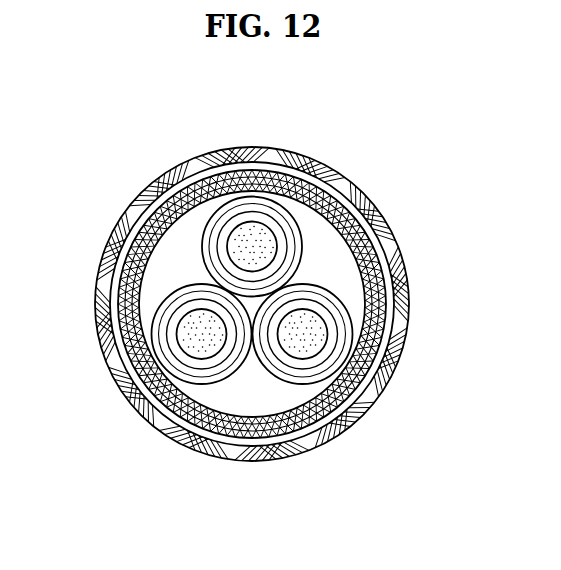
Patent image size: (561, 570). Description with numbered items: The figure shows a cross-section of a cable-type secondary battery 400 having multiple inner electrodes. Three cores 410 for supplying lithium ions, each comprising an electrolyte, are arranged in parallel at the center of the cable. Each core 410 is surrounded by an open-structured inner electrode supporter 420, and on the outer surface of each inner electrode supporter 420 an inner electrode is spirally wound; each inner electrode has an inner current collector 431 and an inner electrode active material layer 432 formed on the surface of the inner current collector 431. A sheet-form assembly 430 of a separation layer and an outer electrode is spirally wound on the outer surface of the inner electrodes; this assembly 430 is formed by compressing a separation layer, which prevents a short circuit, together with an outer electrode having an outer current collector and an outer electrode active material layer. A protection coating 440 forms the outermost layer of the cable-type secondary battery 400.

The cable-type secondary battery 400 is at (122, 148).
The core for supplying lithium ions 410 is at (242, 235).
The inner electrode supporter 420 is at (280, 225).
The inner current collector 431 is at (293, 232).
The inner electrode active material layer 432 is at (323, 217).
The assembly of a separation layer-an outer electrode 430 is at (365, 242).
The protection coating 440 is at (400, 285).